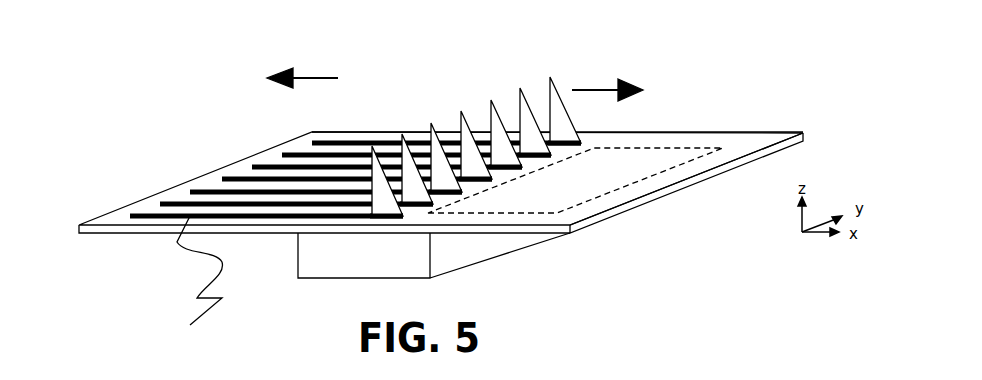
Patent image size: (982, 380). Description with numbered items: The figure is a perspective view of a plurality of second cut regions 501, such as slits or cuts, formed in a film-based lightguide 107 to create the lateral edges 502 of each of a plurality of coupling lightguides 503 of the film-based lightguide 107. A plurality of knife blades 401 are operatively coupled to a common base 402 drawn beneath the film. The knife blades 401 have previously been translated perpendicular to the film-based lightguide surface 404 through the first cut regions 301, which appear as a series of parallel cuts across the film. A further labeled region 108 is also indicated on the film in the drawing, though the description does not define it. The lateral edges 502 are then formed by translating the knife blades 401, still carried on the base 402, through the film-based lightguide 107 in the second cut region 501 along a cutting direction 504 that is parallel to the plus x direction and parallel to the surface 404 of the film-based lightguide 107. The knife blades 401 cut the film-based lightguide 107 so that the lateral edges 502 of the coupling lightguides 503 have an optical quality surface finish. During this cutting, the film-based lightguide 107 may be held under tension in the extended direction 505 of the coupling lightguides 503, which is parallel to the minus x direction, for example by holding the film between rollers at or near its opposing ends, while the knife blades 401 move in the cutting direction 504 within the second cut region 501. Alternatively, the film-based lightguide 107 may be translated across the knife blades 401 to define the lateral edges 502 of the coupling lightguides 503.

The film-based lightguide 107 is at (700, 132).
The surface of substrate 108 is at (668, 162).
The first cut regions 301 is at (152, 212).
The knife blades 401 is at (437, 150).
The base 402 is at (337, 263).
The film-based lightguide surface 404 is at (632, 133).
The second cut regions 501 is at (189, 285).
The lateral edges 502 is at (321, 216).
The coupling lightguides 503 is at (332, 187).
The cutting direction 504 is at (604, 88).
The extended direction 505 is at (306, 78).